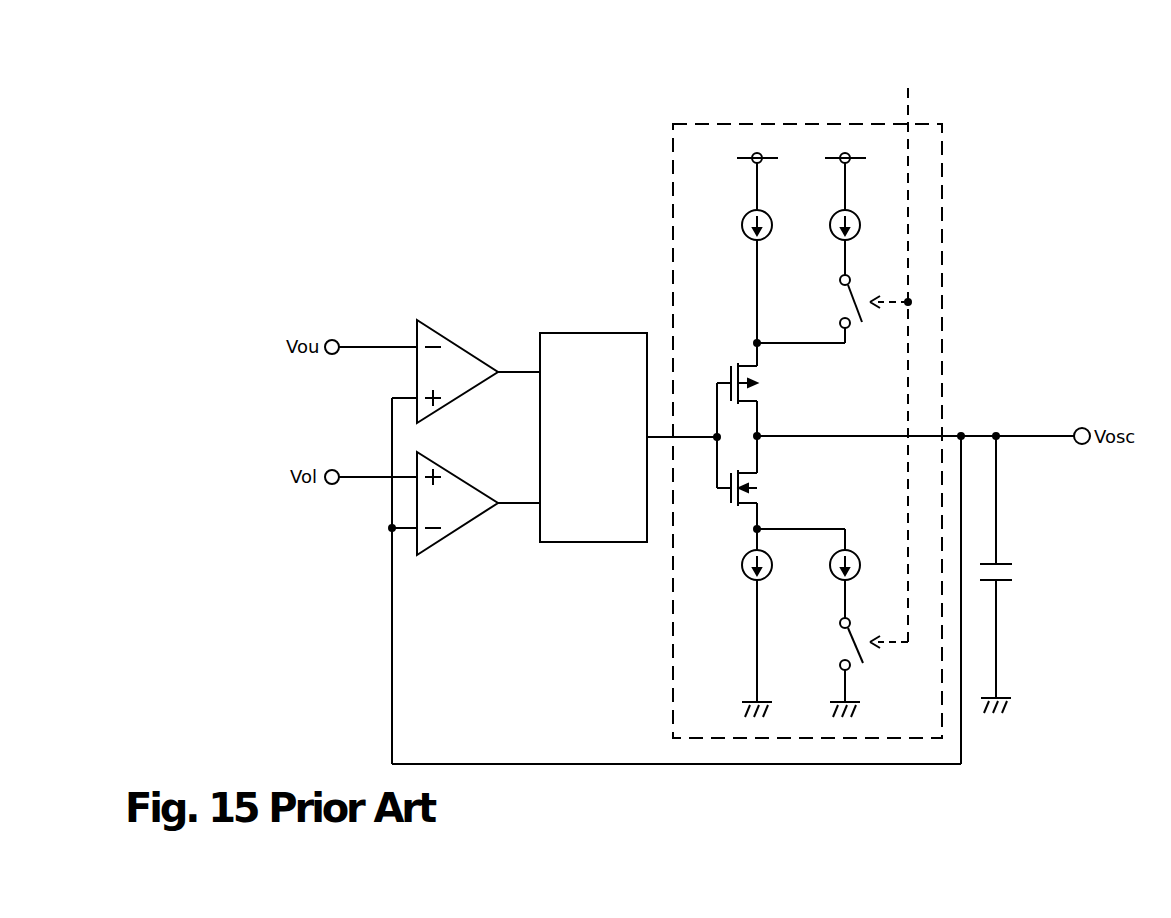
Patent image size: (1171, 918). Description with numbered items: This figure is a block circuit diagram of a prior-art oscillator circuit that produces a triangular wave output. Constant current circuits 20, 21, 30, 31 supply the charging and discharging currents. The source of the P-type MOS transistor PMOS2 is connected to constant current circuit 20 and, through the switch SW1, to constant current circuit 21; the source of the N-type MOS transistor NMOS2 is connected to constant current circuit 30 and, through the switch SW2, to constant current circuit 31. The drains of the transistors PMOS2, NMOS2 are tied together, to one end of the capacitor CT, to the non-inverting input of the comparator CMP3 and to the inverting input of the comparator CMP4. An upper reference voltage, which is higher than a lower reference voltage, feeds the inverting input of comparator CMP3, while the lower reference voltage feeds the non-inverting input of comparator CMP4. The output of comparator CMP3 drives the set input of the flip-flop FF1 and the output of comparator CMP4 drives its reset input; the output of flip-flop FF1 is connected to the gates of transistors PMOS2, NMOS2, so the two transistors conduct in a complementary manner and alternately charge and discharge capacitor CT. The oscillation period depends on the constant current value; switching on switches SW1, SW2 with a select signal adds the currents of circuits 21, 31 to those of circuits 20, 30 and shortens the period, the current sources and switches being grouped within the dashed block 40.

The constant current circuit 20 is at (745, 213).
The constant current circuit 21 is at (831, 213).
The constant current circuit 30 is at (745, 577).
The constant current circuit 31 is at (833, 577).
The charge/discharge current control circuit 40 is at (712, 124).
The comparator CMP3 is at (455, 344).
The comparator CMP4 is at (462, 526).
The flip-flop FF1 is at (598, 333).
The switch SW1 is at (842, 307).
The switch SW2 is at (843, 647).
The P-type MOS transistor PMOS2 is at (765, 383).
The N-type MOS transistor NMOS2 is at (762, 490).
The capacitor CT is at (1012, 572).